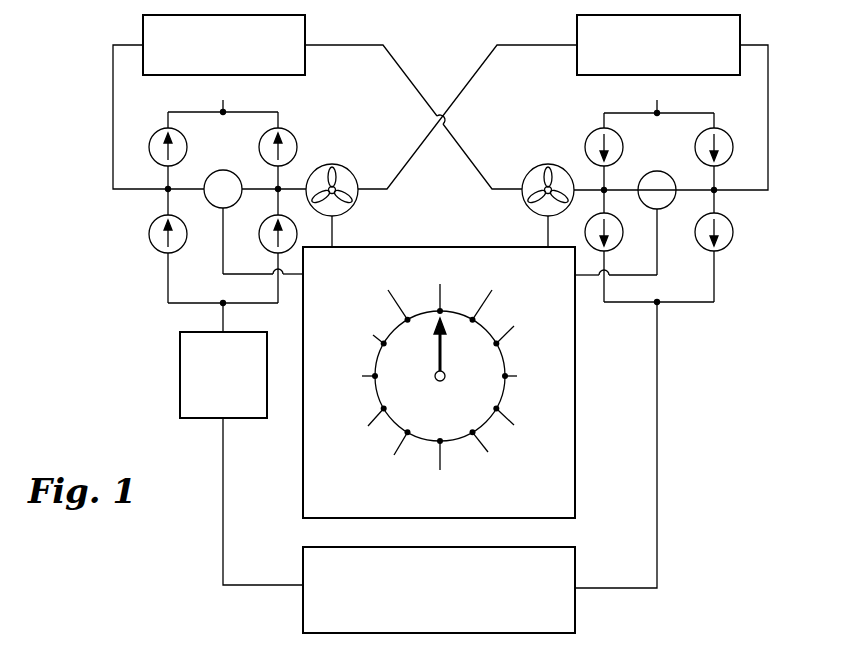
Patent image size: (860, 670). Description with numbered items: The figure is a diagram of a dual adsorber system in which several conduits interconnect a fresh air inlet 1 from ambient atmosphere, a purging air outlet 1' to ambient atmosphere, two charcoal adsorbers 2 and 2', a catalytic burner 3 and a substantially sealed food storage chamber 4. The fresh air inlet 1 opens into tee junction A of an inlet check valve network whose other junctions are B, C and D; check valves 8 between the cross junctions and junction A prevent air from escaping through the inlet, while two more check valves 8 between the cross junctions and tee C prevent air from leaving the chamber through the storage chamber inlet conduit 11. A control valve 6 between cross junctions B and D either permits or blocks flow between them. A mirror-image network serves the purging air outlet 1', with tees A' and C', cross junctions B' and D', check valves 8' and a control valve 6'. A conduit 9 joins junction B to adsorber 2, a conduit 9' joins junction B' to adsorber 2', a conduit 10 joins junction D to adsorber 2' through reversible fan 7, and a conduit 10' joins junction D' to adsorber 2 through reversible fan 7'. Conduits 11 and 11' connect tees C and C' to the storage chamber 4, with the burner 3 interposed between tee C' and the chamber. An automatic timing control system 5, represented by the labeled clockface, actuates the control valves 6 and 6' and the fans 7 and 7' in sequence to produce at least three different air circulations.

The fresh air inlet 1 is at (664, 110).
The purging air outlet 1' is at (223, 109).
The charcoal adsorber 2 is at (672, 41).
The charcoal adsorber 2' is at (237, 37).
The catalytic burner 3 is at (180, 380).
The storage chamber 4 is at (577, 562).
The automatic timing control system 5 is at (478, 247).
The control valve 6 is at (625, 208).
The control valve 6' is at (255, 209).
The reversible fan 7 is at (537, 195).
The reversible fan 7' is at (341, 194).
The check valves 8 is at (659, 207).
The check valves 8' is at (219, 209).
The conduit 9 is at (684, 117).
The conduit 9' is at (143, 117).
The conduit 10 is at (467, 117).
The conduit 10' is at (413, 117).
The storage chamber inlet conduit 11 is at (638, 445).
The storage chamber outlet conduit 11' is at (242, 501).